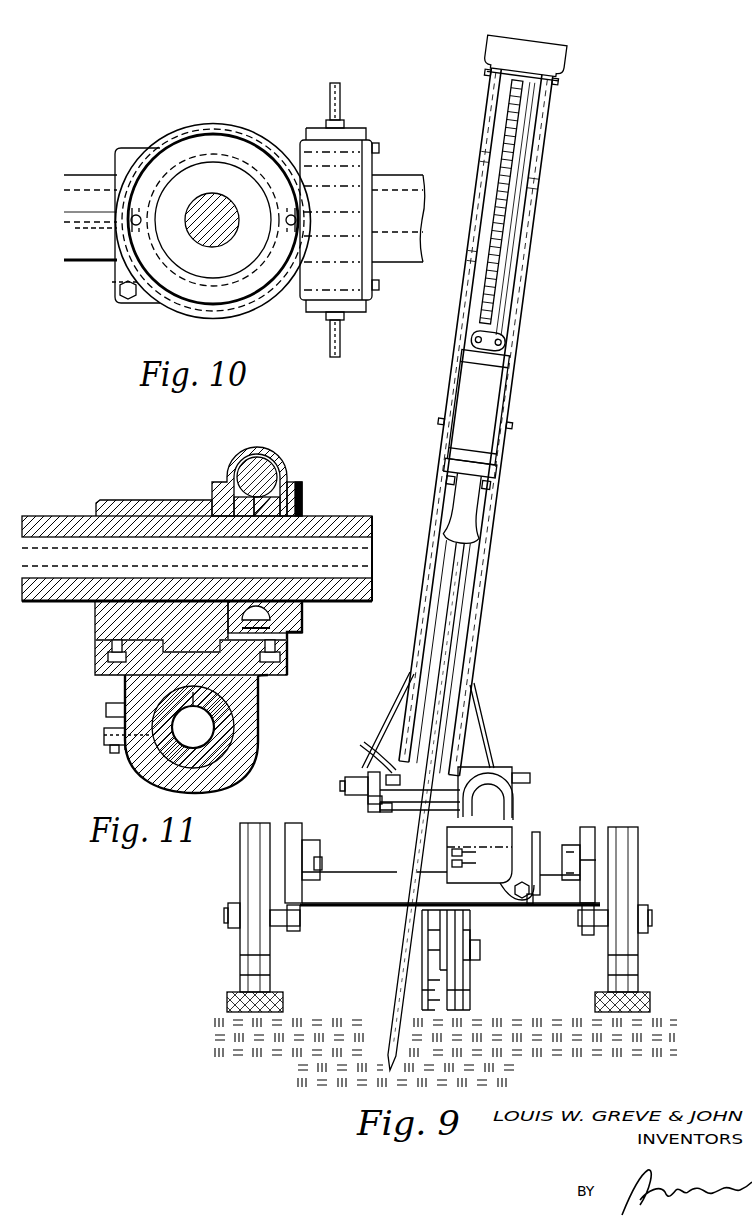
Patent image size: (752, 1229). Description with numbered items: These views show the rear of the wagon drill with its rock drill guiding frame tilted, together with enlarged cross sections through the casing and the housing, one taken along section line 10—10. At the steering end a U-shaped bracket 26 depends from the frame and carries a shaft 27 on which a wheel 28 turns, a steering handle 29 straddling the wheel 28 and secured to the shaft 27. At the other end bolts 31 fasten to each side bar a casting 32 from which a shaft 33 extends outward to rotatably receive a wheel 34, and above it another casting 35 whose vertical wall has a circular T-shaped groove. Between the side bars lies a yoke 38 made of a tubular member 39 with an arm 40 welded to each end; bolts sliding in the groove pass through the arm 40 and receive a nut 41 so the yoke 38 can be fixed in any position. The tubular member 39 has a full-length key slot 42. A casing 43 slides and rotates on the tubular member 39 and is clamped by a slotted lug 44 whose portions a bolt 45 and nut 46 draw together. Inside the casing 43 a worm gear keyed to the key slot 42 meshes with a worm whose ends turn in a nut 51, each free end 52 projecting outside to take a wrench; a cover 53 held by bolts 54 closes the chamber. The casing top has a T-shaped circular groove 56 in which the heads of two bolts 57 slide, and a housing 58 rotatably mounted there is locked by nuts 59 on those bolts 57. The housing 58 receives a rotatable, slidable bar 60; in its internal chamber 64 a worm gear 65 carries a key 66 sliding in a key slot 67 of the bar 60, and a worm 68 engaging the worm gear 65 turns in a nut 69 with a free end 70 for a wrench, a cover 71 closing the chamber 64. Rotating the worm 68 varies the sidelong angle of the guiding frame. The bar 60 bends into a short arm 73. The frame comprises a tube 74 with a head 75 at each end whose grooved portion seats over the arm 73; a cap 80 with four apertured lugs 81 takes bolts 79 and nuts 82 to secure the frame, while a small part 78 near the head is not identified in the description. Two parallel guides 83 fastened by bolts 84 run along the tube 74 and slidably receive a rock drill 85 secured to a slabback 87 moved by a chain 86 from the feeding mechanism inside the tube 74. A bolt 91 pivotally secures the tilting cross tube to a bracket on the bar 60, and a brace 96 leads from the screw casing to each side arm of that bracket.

In FIG. 9, the section line 10 is at (439, 838).
In FIG. 9, the U-shaped bracket 26 is at (466, 928).
In FIG. 9, the shaft 27 is at (482, 952).
In FIG. 9, the wheel 28 is at (448, 990).
In FIG. 9, the steering handle 29 is at (478, 956).
In FIG. 9, the bolts 31 is at (300, 918).
In FIG. 9, the casting 32 is at (284, 935).
In FIG. 9, the shaft 33 is at (226, 918).
In FIG. 9, the wheel 34 is at (246, 960).
In FIG. 9, the casting 35 is at (295, 826).
In FIG. 9, the supporting shaft or yoke 38 is at (451, 888).
In FIG. 10, the tubular member 39 is at (78, 183).
In FIG. 11, the tubular member 39 is at (226, 722).
In FIG. 9, the arm 40 is at (312, 842).
In FIG. 9, the nut 41 is at (320, 860).
In FIG. 10, the key slot 42 is at (76, 232).
In FIG. 11, the key slot 42 is at (193, 727).
In FIG. 10, the casing 43 is at (127, 156).
In FIG. 11, the casing 43 is at (160, 770).
In FIG. 9, the casing 43 is at (464, 878).
In FIG. 10, the slotted lug 44 is at (118, 292).
In FIG. 11, the slotted lug 44 is at (106, 737).
In FIG. 9, the slotted lug 44 is at (454, 865).
In FIG. 10, the bolt 45 is at (128, 300).
In FIG. 11, the bolt 45 is at (110, 705).
In FIG. 11, the nut 46 is at (114, 752).
In FIG. 10, the nut 51 is at (345, 128).
In FIG. 9, the nut 51 is at (517, 898).
In FIG. 10, the free end 52 is at (341, 96).
In FIG. 9, the free end 52 is at (532, 900).
In FIG. 10, the cover 53 is at (370, 172).
In FIG. 9, the cover 53 is at (536, 838).
In FIG. 10, the bolts 54 is at (381, 146).
In FIG. 10, the T-shaped circular groove 56 is at (250, 150).
In FIG. 11, the T-shaped circular groove 56 is at (282, 652).
In FIG. 10, the bolts 57 is at (142, 222).
In FIG. 11, the housing 58 is at (120, 504).
In FIG. 11, the nuts 59 is at (195, 652).
In FIG. 11, the bar 60 is at (46, 522).
In FIG. 11, the internal chamber 64 is at (228, 482).
In FIG. 11, the worm gear 65 is at (244, 512).
In FIG. 11, the key 66 is at (265, 512).
In FIG. 11, the key slot 67 is at (334, 520).
In FIG. 11, the worm 68 is at (266, 470).
In FIG. 9, the nut 69 is at (514, 770).
In FIG. 9, the free end 70 is at (531, 778).
In FIG. 11, the cover 71 is at (302, 622).
In FIG. 9, the arm 73 is at (363, 802).
In FIG. 9, the tube 74 is at (470, 580).
In FIG. 9, the head 75 is at (545, 50).
In FIG. 9, the block 78 is at (402, 781).
In FIG. 9, the bolts 79 is at (390, 773).
In FIG. 9, the cap 80 is at (420, 809).
In FIG. 9, the apertured lugs 81 is at (368, 800).
In FIG. 9, the nuts 82 is at (383, 819).
In FIG. 9, the parallel guides 83 is at (522, 272).
In FIG. 9, the bolts 84 is at (556, 80).
In FIG. 9, the rock drill 85 is at (496, 404).
In FIG. 9, the chain 86 is at (525, 196).
In FIG. 9, the support or slabback 87 is at (510, 346).
In FIG. 9, the bolt 91 is at (340, 785).
In FIG. 9, the brace 96 is at (394, 703).